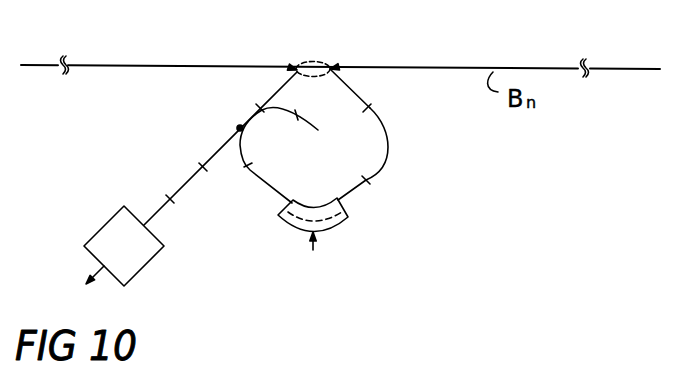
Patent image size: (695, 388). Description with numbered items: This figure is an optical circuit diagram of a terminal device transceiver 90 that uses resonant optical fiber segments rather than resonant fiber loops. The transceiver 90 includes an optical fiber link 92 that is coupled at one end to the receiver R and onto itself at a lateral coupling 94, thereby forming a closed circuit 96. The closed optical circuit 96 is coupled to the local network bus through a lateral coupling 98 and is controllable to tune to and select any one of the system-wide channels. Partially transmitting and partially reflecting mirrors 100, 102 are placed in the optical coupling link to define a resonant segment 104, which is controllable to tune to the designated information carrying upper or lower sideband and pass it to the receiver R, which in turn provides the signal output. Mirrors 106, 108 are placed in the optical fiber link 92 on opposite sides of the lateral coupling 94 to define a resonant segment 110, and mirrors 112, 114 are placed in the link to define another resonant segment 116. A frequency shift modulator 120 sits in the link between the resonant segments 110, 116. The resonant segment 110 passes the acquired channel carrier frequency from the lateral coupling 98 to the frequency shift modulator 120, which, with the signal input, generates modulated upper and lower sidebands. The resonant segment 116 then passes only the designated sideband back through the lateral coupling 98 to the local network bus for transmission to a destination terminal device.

The transceiver 90 is at (490, 167).
The optical fiber link 92 is at (263, 108).
The lateral coupling 94 is at (236, 118).
The closed circuit 96 is at (344, 191).
The lateral coupling 98 is at (318, 59).
The partially transmitting and partially reflecting mirror 100 is at (172, 201).
The partially transmitting and partially reflecting mirror 102 is at (206, 158).
The resonant segment 104 is at (165, 174).
The mirror 106 is at (252, 166).
The mirror 108 is at (310, 126).
The resonant segment 110 is at (252, 134).
The mirror 112 is at (372, 182).
The mirror 114 is at (372, 107).
The resonant segment 116 is at (406, 135).
The frequency shift modulator 120 is at (344, 230).